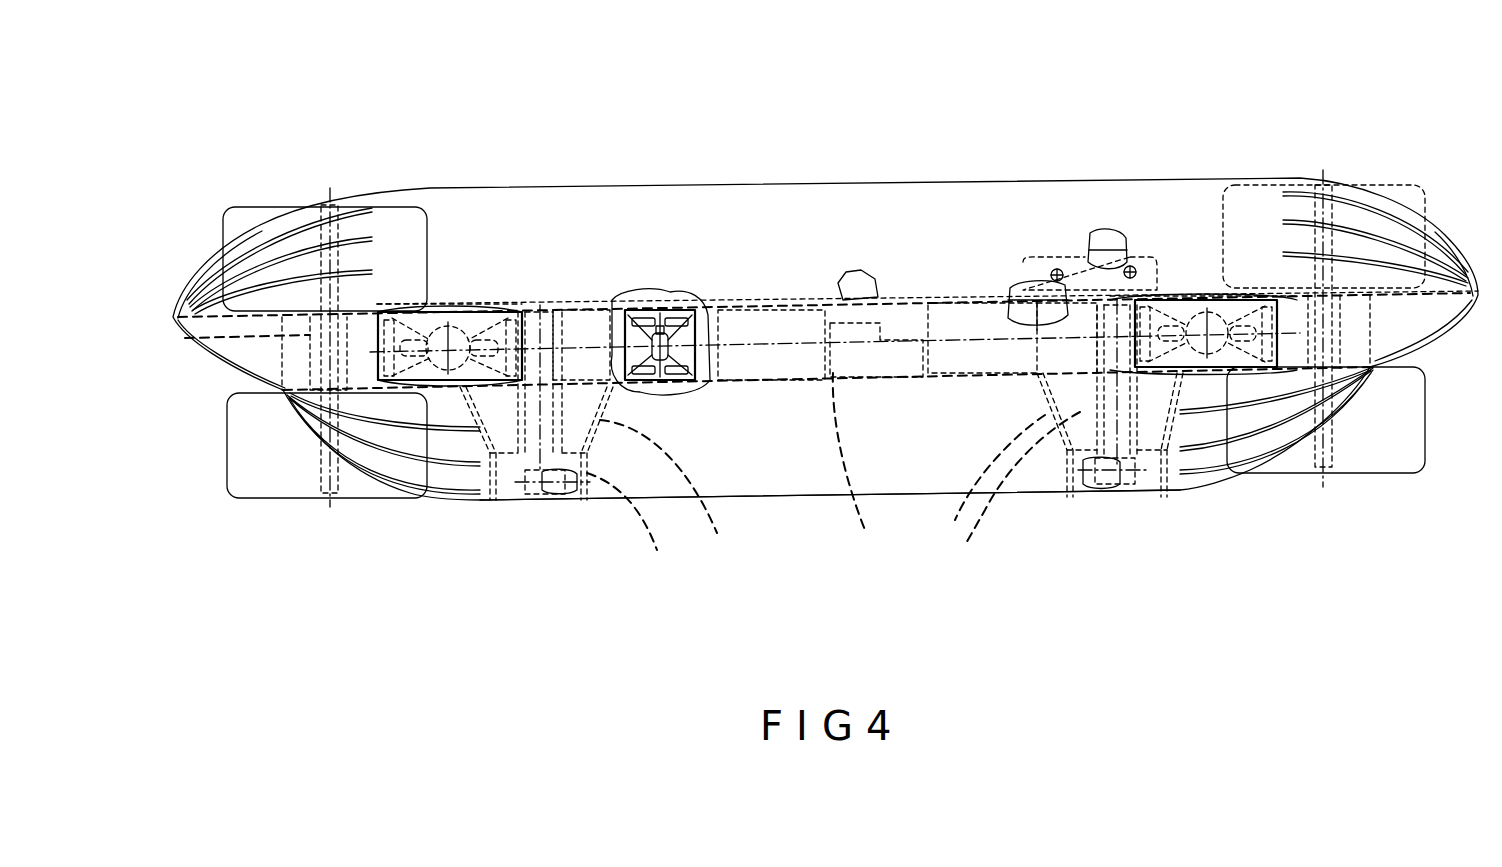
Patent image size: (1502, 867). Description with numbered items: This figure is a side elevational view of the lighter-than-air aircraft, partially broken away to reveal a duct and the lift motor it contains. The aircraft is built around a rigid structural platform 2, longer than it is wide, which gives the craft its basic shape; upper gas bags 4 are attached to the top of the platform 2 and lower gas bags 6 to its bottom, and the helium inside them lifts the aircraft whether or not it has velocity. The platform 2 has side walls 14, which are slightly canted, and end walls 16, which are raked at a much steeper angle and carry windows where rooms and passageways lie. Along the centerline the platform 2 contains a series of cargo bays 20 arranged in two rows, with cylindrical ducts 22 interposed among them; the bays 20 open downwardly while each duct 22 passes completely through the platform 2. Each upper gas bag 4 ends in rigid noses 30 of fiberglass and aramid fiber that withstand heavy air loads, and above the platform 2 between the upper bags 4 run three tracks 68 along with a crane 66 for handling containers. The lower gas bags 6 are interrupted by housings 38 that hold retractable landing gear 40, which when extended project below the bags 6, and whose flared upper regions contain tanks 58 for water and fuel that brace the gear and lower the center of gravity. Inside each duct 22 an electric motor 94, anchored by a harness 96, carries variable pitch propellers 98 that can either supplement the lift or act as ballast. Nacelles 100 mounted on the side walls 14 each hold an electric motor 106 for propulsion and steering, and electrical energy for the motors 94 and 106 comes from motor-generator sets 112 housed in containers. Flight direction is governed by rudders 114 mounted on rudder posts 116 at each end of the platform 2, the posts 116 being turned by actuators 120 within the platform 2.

The structural platform 2 is at (1015, 302).
The upper gas bag 4 is at (997, 185).
The lower gas bag 6 is at (781, 498).
The side wall 14 is at (993, 347).
The end wall 16 is at (200, 350).
The cargo bay 20 is at (965, 320).
The cylindrical duct 22 is at (700, 320).
The rigid nose 30 is at (197, 280).
The housing 38 is at (985, 548).
The landing gear 40 is at (556, 493).
The tank 58 is at (821, 478).
The crane 66 is at (1107, 232).
The track 68 is at (835, 272).
The electric motor 94 is at (690, 343).
The harness 96 is at (690, 357).
The variable pitch propeller 98 is at (643, 317).
The nacelle 100 is at (405, 310).
The electric motor 106 is at (490, 335).
The motor-generator set 112 is at (862, 468).
The rudder 114 is at (223, 208).
The rudder post 116 is at (290, 230).
The actuator 120 is at (200, 353).